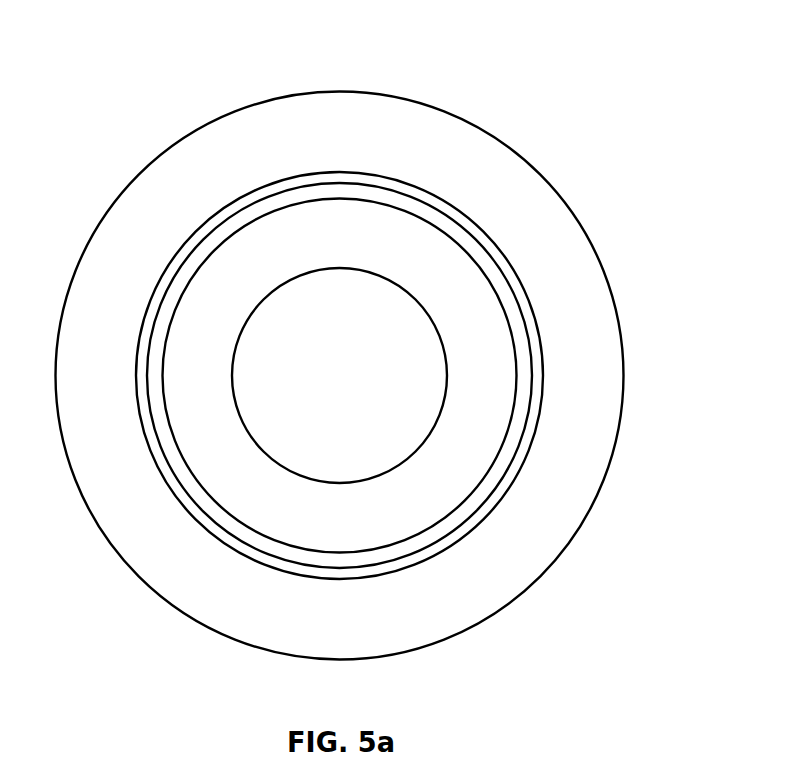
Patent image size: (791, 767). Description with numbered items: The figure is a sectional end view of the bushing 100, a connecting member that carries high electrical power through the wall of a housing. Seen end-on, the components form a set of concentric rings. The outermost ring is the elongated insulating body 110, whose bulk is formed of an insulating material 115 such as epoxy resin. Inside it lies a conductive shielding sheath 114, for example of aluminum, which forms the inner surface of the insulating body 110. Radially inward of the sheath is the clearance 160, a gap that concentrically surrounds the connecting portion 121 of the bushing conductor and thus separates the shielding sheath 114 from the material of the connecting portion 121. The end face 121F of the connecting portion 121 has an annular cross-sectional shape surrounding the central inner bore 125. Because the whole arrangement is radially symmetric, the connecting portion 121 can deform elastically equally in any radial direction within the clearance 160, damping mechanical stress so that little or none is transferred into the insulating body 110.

The bushing 100 is at (630, 58).
The insulating body 110 is at (538, 164).
The insulating material 115 is at (243, 117).
The shielding sheath 114 is at (175, 253).
The clearance 160 is at (417, 207).
The connecting portion 121 is at (495, 382).
The end face 121F is at (375, 246).
The inner bore 125 is at (366, 389).